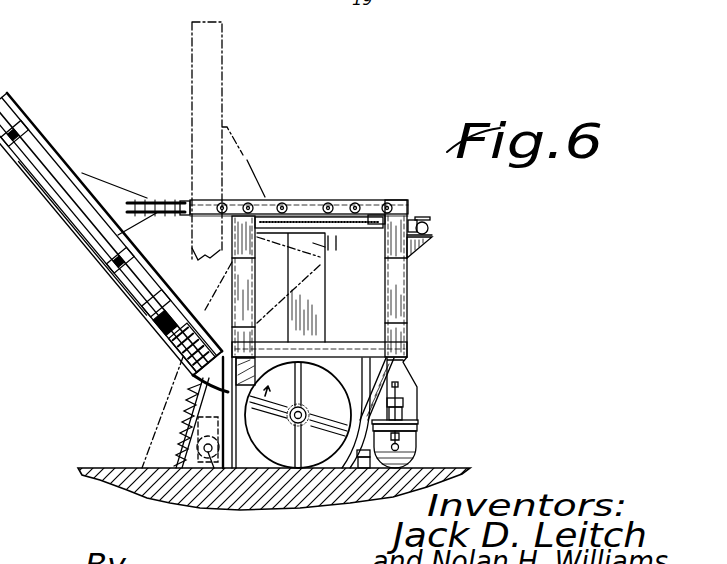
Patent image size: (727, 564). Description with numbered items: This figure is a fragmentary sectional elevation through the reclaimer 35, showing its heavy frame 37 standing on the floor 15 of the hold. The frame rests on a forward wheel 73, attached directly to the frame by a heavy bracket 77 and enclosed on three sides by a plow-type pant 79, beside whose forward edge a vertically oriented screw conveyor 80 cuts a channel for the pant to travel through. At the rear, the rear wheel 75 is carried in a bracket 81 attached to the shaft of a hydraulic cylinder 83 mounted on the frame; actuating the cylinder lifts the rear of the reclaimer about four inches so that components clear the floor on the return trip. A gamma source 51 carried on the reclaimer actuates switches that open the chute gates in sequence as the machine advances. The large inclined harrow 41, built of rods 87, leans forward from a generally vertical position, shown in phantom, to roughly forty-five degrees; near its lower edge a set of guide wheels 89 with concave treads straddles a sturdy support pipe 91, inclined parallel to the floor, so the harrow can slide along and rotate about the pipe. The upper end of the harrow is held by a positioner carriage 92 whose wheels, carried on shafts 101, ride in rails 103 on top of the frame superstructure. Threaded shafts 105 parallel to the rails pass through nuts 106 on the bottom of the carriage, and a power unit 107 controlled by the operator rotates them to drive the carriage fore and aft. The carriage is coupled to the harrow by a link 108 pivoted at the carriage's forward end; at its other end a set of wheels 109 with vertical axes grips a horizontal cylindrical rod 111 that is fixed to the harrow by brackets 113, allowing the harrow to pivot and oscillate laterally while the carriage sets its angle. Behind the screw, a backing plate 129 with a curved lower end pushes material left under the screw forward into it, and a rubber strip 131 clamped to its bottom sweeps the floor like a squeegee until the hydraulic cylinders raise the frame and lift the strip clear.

The floor 15 is at (96, 468).
The reclaimer 35 is at (341, 251).
The frame 37 is at (417, 323).
The harrow 41 is at (190, 76).
The gamma source 51 is at (387, 471).
The forward wheel 73 is at (212, 452).
The rear wheel 75 is at (423, 456).
The bracket 77 is at (216, 470).
The pant 79 is at (237, 440).
The screw conveyor 80 is at (163, 431).
The bracket 81 is at (420, 440).
The hydraulic cylinder 83 is at (408, 410).
The rod 87 is at (93, 242).
The set of guide wheels 89 is at (207, 318).
The support pipe 91 is at (190, 360).
The positioner carriage 92 is at (342, 190).
The shaft 101 is at (390, 202).
The rail 103 is at (410, 200).
The threaded shaft 105 is at (306, 198).
The nut 106 is at (363, 229).
The power unit 107 is at (433, 228).
The link 108 is at (152, 217).
The wheel 109 is at (172, 198).
The cylindrical rod 111 is at (150, 242).
The bracket 113 is at (100, 181).
The backing plate 129 is at (362, 366).
The rubber strip 131 is at (347, 469).